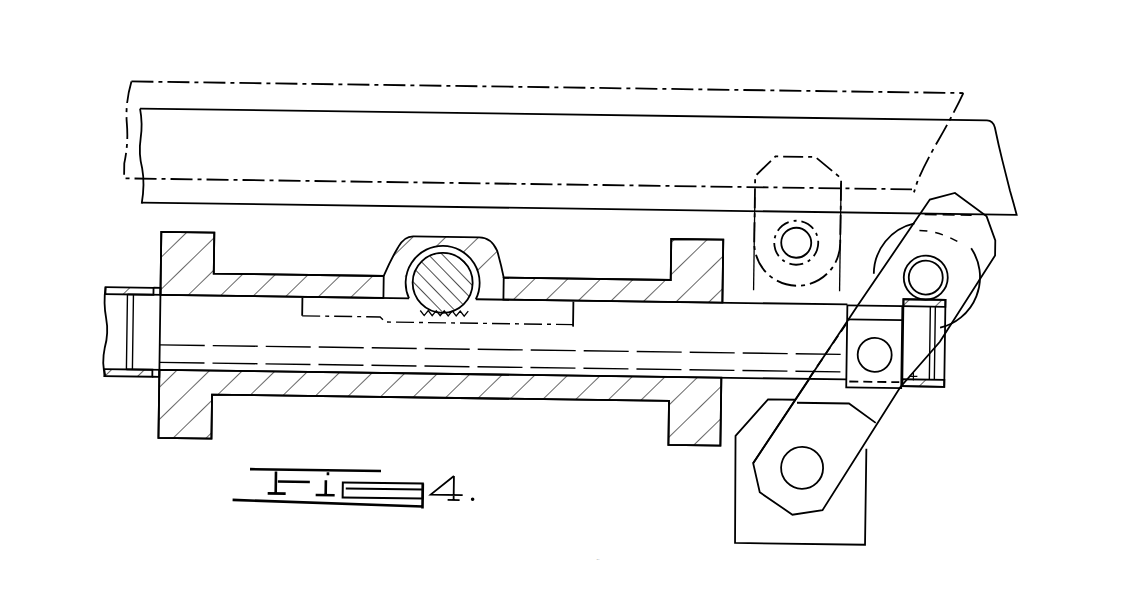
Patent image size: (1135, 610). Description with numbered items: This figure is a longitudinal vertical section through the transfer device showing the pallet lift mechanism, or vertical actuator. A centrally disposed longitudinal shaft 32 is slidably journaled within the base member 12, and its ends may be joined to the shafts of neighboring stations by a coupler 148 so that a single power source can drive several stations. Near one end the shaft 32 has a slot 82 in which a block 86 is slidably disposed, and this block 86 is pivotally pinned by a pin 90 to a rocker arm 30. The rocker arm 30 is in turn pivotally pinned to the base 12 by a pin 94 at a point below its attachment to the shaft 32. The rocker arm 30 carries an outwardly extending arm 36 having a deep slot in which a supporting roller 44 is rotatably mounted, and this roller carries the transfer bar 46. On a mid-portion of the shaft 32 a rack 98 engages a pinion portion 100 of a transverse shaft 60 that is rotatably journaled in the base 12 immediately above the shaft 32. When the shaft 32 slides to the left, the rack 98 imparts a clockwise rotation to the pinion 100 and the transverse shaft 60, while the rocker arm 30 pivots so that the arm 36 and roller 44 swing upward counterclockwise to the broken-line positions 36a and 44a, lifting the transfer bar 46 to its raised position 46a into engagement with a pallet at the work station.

The base member 12 is at (602, 393).
The rocker arm 30 is at (896, 413).
The longitudinal shaft 32 is at (570, 361).
The arm 36 is at (973, 274).
The arm (raised position) 36a is at (828, 163).
The supporting roller 44 is at (948, 297).
The supporting roller (raised position) 44a is at (848, 187).
The transfer bar 46 is at (957, 131).
The transfer bar (raised position) 46a is at (836, 98).
The transverse shaft 60 is at (455, 277).
The slot 82 is at (950, 318).
The block 86 is at (907, 380).
The pin 90 is at (877, 351).
The pin 94 is at (814, 467).
The rack 98 is at (492, 320).
The pinion portion 100 is at (441, 255).
The coupler 148 is at (120, 295).